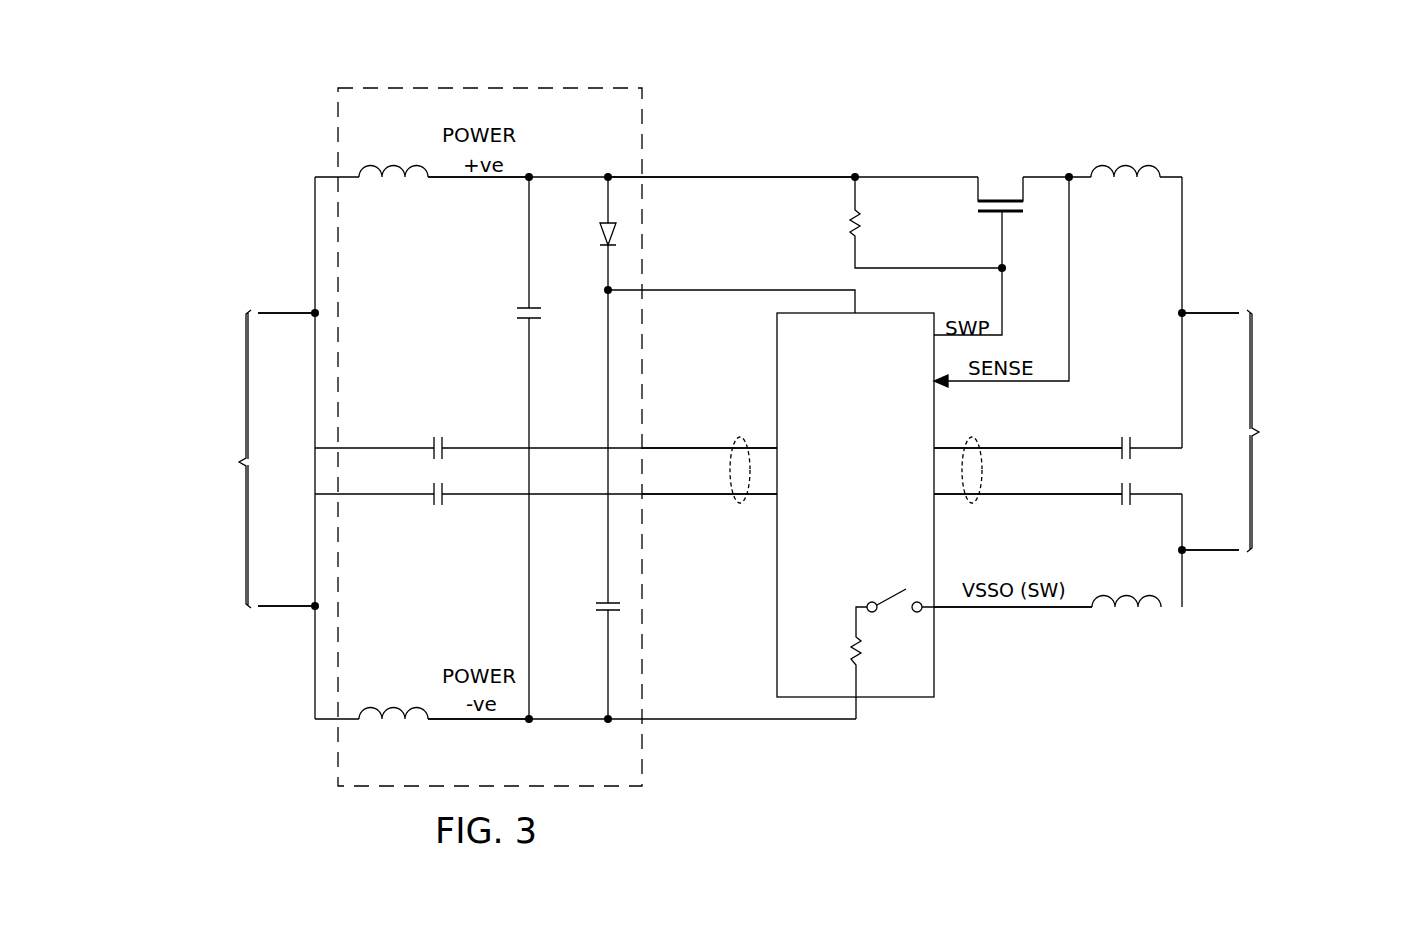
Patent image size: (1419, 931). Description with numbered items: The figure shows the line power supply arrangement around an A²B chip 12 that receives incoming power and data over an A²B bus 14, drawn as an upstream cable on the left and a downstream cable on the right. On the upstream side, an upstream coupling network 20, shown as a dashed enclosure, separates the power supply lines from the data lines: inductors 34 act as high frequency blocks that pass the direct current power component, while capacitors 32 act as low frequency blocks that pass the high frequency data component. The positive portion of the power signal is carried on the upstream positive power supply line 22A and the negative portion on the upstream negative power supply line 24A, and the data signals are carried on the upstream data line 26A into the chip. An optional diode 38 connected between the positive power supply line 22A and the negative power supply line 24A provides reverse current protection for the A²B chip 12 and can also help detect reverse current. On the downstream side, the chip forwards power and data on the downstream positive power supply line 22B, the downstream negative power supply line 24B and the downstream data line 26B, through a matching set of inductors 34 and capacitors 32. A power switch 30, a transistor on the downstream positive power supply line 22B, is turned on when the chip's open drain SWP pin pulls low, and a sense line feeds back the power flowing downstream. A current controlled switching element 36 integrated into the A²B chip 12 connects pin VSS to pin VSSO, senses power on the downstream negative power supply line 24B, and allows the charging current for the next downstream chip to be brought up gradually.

The A²B chip 12 is at (870, 552).
The A²B bus 14 is at (271, 310).
The upstream coupling network 20 is at (475, 82).
The upstream positive power supply line 22A is at (480, 182).
The downstream positive power supply line 22B is at (748, 176).
The upstream negative power supply line 24A is at (480, 723).
The downstream negative power supply line 24B is at (1011, 612).
The upstream data line 26A is at (685, 446).
The downstream data line 26B is at (1047, 446).
The power switch 30 is at (1010, 215).
The capacitors 32 is at (437, 435).
The inductors 34 is at (387, 160).
The current controlled switching element 36 is at (894, 585).
The diode 38 is at (598, 232).